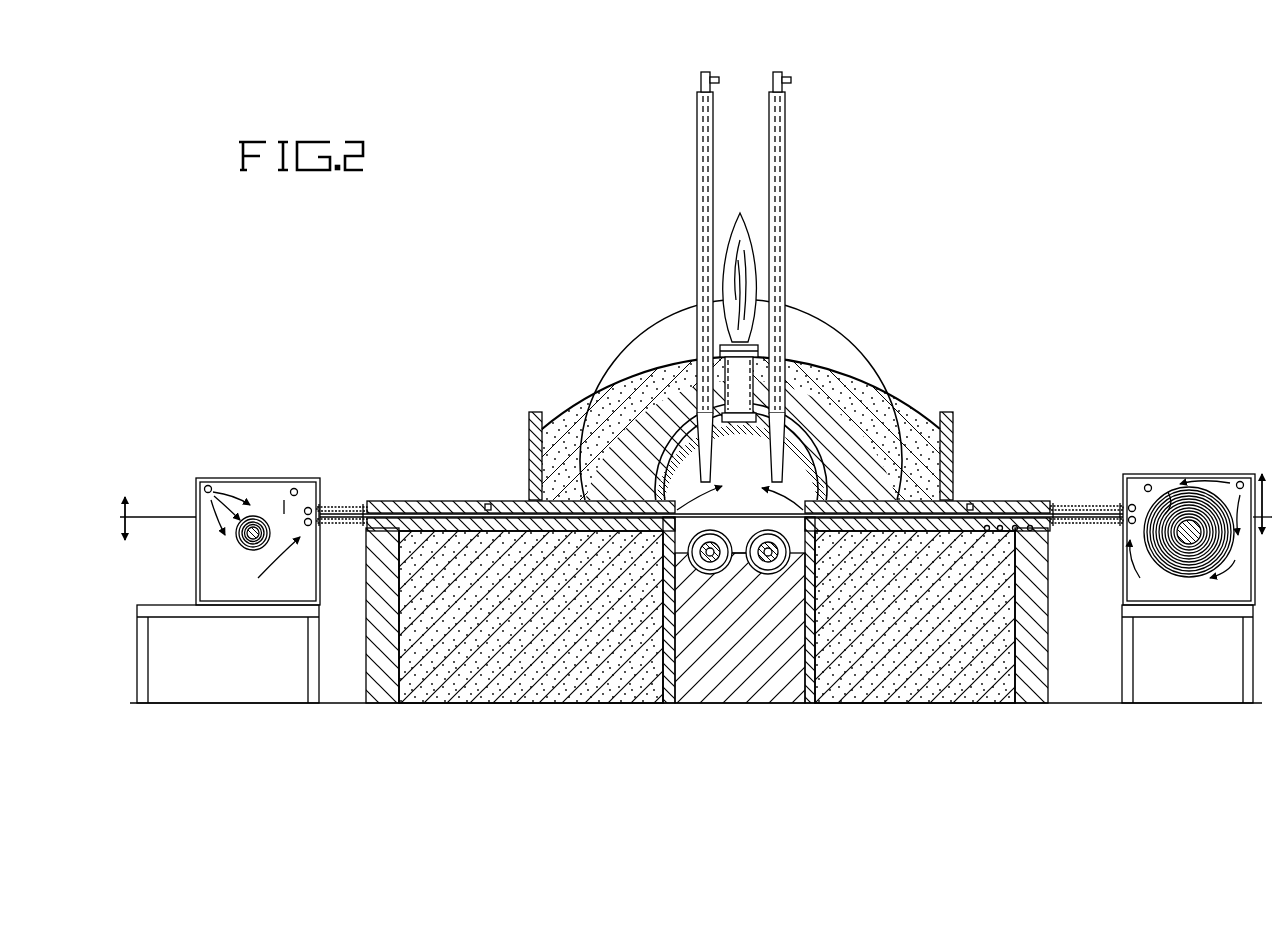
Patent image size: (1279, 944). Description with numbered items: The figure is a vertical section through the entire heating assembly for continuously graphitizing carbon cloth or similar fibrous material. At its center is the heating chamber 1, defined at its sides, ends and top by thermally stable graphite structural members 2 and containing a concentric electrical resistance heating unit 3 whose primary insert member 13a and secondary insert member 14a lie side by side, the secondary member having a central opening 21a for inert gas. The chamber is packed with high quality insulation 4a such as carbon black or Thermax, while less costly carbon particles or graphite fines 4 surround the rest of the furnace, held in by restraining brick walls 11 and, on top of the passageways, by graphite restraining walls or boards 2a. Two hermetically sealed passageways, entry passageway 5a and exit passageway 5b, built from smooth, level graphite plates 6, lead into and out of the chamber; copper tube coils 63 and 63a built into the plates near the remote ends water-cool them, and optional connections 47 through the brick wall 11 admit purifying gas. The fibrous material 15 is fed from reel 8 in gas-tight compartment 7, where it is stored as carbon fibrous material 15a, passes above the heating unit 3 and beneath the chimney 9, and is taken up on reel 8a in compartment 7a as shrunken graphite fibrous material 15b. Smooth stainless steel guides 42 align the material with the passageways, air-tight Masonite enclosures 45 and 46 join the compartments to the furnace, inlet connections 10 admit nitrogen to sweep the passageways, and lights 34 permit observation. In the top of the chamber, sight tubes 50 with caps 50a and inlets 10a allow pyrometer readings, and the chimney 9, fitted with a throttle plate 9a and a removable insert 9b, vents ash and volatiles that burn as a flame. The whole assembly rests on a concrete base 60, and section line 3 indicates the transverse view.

The heating chamber 1 is at (741, 486).
The thermally stable structural material 2 is at (800, 398).
The restraining walls 2a is at (538, 430).
The electrical resistance heating unit 3 is at (696, 503).
The loose thermal insulation packing 4 is at (626, 381).
The thermal packing insulation means 4a is at (862, 432).
The entry passageway 5a is at (1036, 501).
The exit passageway 5b is at (400, 501).
The graphite plates 6 is at (456, 501).
The entry compartment 7 is at (1225, 592).
The exit compartment 7a is at (198, 568).
The supply reel 8 is at (1188, 540).
The take-up reel 8a is at (253, 540).
The chimney 9 is at (758, 354).
The throttle plate 9a is at (748, 348).
The removable insert 9b is at (745, 418).
The inlet connection 10 is at (208, 486).
The sight tube inlet 10a is at (719, 80).
The brick wall 11 is at (366, 633).
The primary insert member 13a is at (739, 552).
The secondary insert member 14a is at (707, 548).
The fibrous material 15 is at (745, 503).
The carbon fibrous material 15a is at (1168, 490).
The graphite fibrous material 15b is at (285, 505).
The opening of secondary insert member 21a is at (771, 548).
The light 34 is at (296, 489).
The guide means 42 is at (311, 507).
The air-tight enclosure 45 is at (1085, 506).
The air-tight enclosure 46 is at (345, 507).
The gas inlet connection 47 is at (488, 504).
The sight tube 50 is at (697, 150).
The sight tube cap 50a is at (700, 80).
The concrete base 60 is at (985, 703).
The copper tube coil 63 is at (992, 530).
The copper tube coil 63a is at (531, 617).